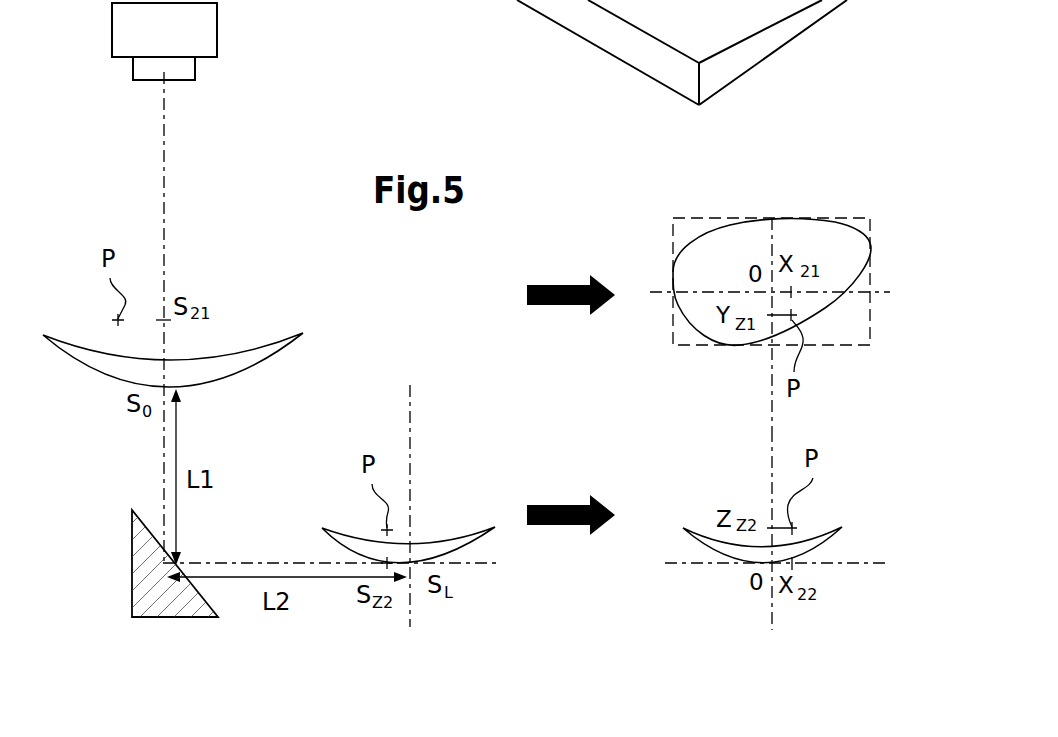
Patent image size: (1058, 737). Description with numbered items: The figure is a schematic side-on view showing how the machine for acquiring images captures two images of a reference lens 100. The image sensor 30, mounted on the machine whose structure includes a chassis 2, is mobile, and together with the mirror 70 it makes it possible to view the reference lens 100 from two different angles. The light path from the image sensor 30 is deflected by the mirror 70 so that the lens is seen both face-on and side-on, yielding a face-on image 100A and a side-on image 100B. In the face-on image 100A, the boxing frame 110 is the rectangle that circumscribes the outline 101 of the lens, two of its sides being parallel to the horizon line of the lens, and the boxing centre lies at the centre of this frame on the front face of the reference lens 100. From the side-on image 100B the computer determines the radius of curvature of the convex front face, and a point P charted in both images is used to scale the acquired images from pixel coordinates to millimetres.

The chassis 2 is at (538, 2).
The image sensor 30 is at (222, 33).
The mirror 70 is at (217, 610).
The reference lens 100 is at (303, 333).
The outline 101 is at (728, 229).
The boxing frame 110 is at (871, 280).
The face-on image 100A is at (852, 310).
The side-on image 100B is at (862, 538).